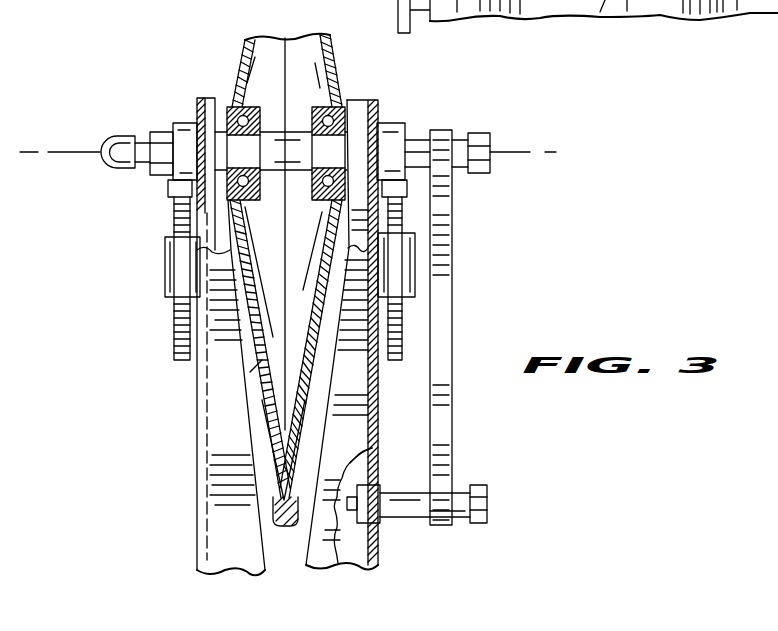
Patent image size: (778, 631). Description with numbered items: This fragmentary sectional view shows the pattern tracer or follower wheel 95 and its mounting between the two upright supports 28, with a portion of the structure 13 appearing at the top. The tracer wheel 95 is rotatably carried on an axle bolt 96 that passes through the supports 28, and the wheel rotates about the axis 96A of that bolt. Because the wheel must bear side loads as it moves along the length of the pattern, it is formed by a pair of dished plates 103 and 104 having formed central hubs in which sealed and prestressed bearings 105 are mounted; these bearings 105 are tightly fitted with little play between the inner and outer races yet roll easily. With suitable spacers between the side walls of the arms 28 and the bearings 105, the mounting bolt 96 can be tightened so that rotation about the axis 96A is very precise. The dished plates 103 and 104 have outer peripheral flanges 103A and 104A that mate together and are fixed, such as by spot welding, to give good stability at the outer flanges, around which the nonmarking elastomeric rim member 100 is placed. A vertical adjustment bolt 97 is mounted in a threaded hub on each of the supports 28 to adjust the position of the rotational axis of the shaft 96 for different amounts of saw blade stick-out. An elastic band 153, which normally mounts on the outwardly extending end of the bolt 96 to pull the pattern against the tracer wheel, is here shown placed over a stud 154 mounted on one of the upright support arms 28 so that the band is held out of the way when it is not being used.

The frame beam 13 is at (507, 0).
The upright supports 28 is at (233, 432).
The pattern tracer wheel 95 is at (258, 377).
The axle bolt 96 is at (462, 135).
The axis 96A is at (531, 153).
The vertical adjustment bolt 97 is at (175, 223).
The elastomeric outer rim member 100 is at (280, 523).
The dished plate 103 is at (243, 50).
The outer peripheral flange 103A is at (317, 462).
The dished plate 104 is at (328, 70).
The outer peripheral flange 104A is at (385, 465).
The bearings 105 is at (230, 107).
The elastic band 153 is at (437, 277).
The stud 154 is at (456, 518).